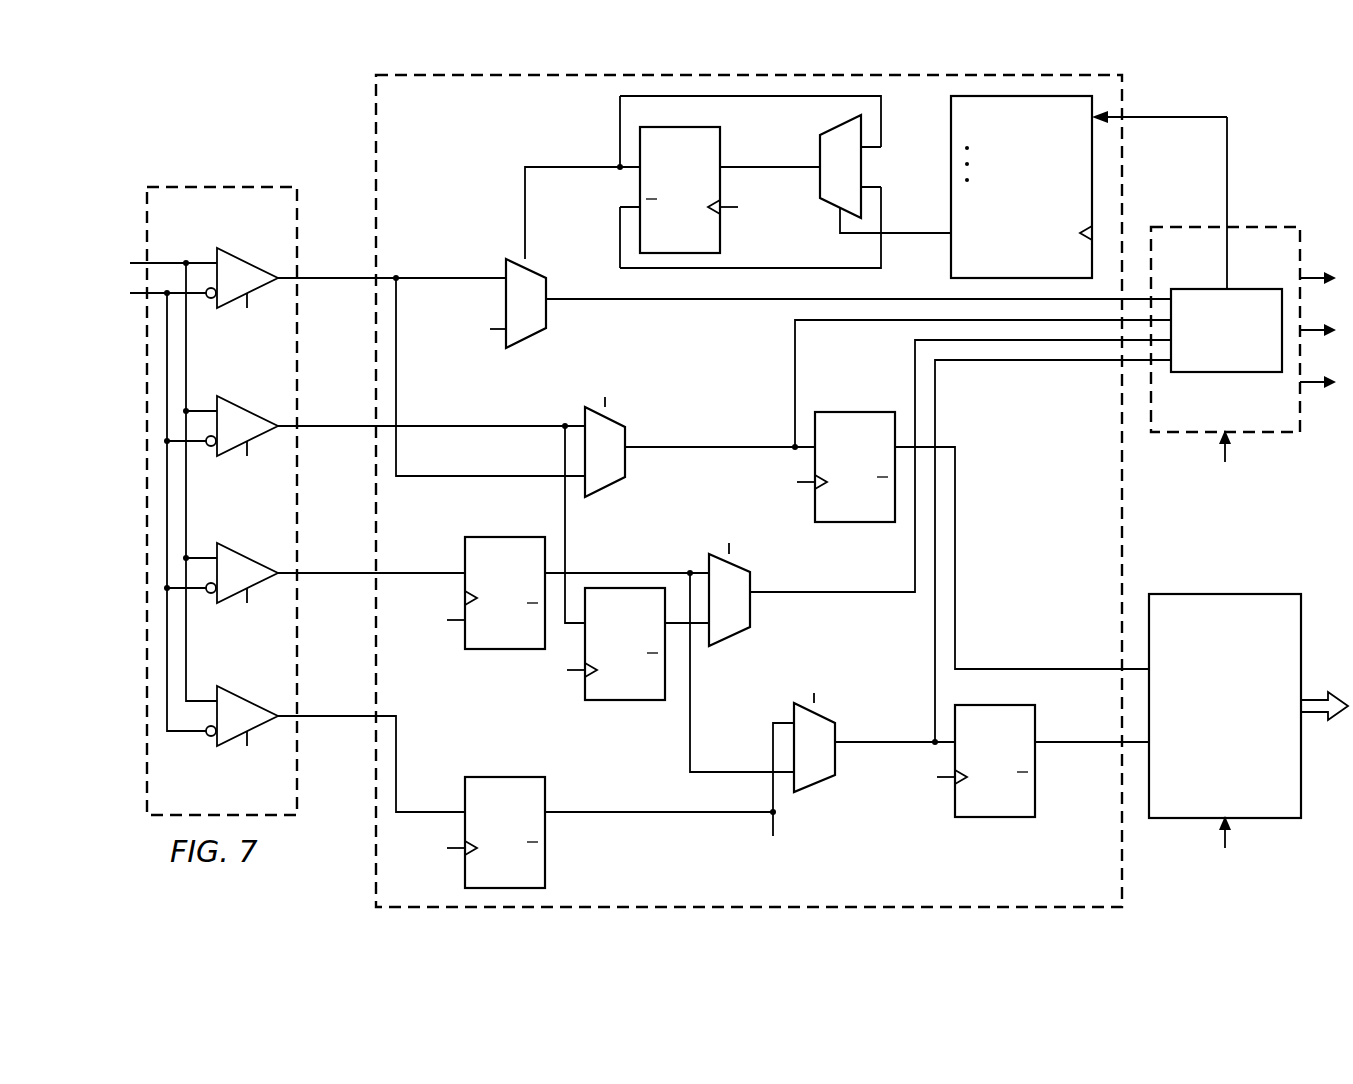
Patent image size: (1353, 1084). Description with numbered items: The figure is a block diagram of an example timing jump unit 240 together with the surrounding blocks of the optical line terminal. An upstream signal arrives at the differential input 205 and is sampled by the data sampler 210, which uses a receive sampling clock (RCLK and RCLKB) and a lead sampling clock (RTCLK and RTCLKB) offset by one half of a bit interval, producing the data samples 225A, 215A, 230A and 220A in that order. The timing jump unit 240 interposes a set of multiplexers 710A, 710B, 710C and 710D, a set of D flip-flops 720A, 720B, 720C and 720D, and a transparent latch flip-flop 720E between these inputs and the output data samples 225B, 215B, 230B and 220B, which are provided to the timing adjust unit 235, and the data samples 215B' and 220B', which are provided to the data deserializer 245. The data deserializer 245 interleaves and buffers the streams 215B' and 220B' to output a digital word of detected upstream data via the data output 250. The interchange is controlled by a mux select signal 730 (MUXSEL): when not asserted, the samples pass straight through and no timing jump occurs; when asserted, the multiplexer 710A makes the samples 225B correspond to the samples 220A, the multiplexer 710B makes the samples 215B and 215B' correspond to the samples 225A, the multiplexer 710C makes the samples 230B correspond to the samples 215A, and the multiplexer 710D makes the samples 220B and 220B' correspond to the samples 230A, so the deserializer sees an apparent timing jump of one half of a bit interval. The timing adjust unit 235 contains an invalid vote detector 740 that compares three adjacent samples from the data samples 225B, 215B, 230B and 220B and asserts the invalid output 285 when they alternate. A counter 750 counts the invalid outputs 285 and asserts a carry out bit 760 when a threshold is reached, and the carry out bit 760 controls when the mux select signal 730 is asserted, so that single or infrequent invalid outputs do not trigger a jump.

The differential input 205 is at (97, 240).
The data sampler 210 is at (200, 182).
The timing jump unit 240 is at (368, 138).
The upstream digital samples 225A is at (347, 272).
The upstream digital samples 215A is at (345, 422).
The upstream digital samples 230A is at (348, 578).
The upstream digital samples 220A is at (345, 720).
The mux select signal 730 is at (545, 164).
The multiplexer 710A is at (548, 322).
The data samples 225B is at (720, 302).
The carry out bit 760 is at (906, 238).
The counter 750 is at (950, 156).
The invalid output 285 is at (1228, 140).
The timing adjust unit 235 is at (1175, 222).
The invalid vote detector 740 is at (1254, 288).
The multiplexer 710B is at (627, 472).
The D flip-flop 720A is at (866, 386).
The data samples 215B is at (944, 383).
The data samples 220B is at (1053, 551).
The data samples 215B' is at (1022, 558).
The transparent latch flip-flop 720E is at (505, 534).
The D flip-flop 720D is at (628, 704).
The multiplexer 710C is at (752, 584).
The data samples 230B is at (880, 596).
The multiplexer 710D is at (838, 730).
The D flip-flop 720C is at (548, 864).
The D flip-flop 720B is at (1000, 818).
The data samples 220B' is at (1092, 767).
The data deserializer 245 is at (1243, 749).
The data output 250 is at (1315, 716).